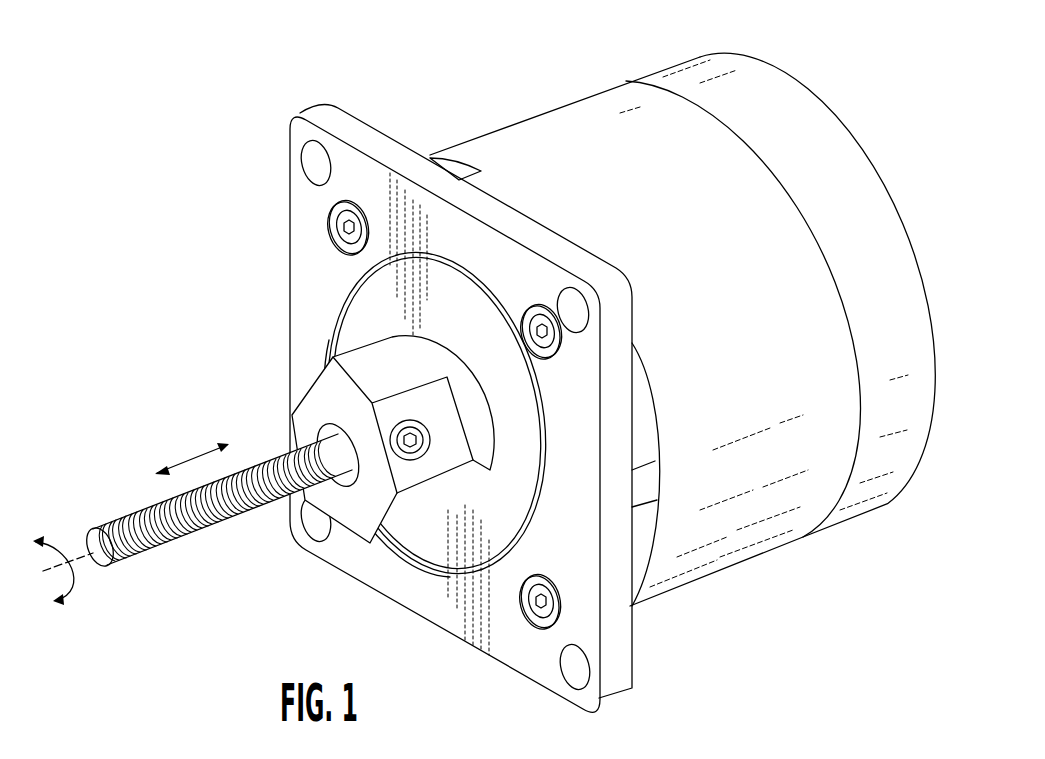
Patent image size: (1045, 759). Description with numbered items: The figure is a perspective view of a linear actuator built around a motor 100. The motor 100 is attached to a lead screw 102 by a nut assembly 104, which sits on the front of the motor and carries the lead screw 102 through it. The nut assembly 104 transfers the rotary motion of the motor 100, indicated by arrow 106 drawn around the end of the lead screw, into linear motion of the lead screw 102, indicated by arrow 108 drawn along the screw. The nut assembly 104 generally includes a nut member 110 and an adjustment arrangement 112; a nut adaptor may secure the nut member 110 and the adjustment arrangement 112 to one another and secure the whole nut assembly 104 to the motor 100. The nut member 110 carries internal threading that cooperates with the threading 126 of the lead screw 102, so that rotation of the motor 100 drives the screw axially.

The motor 100 is at (406, 62).
The lead screw 102 is at (128, 563).
The nut assembly 104 is at (311, 337).
The arrow 106 is at (50, 528).
The arrow 108 is at (197, 453).
The nut member 110 is at (333, 432).
The adjustment arrangement 112 is at (355, 335).
The threading 126 is at (230, 528).